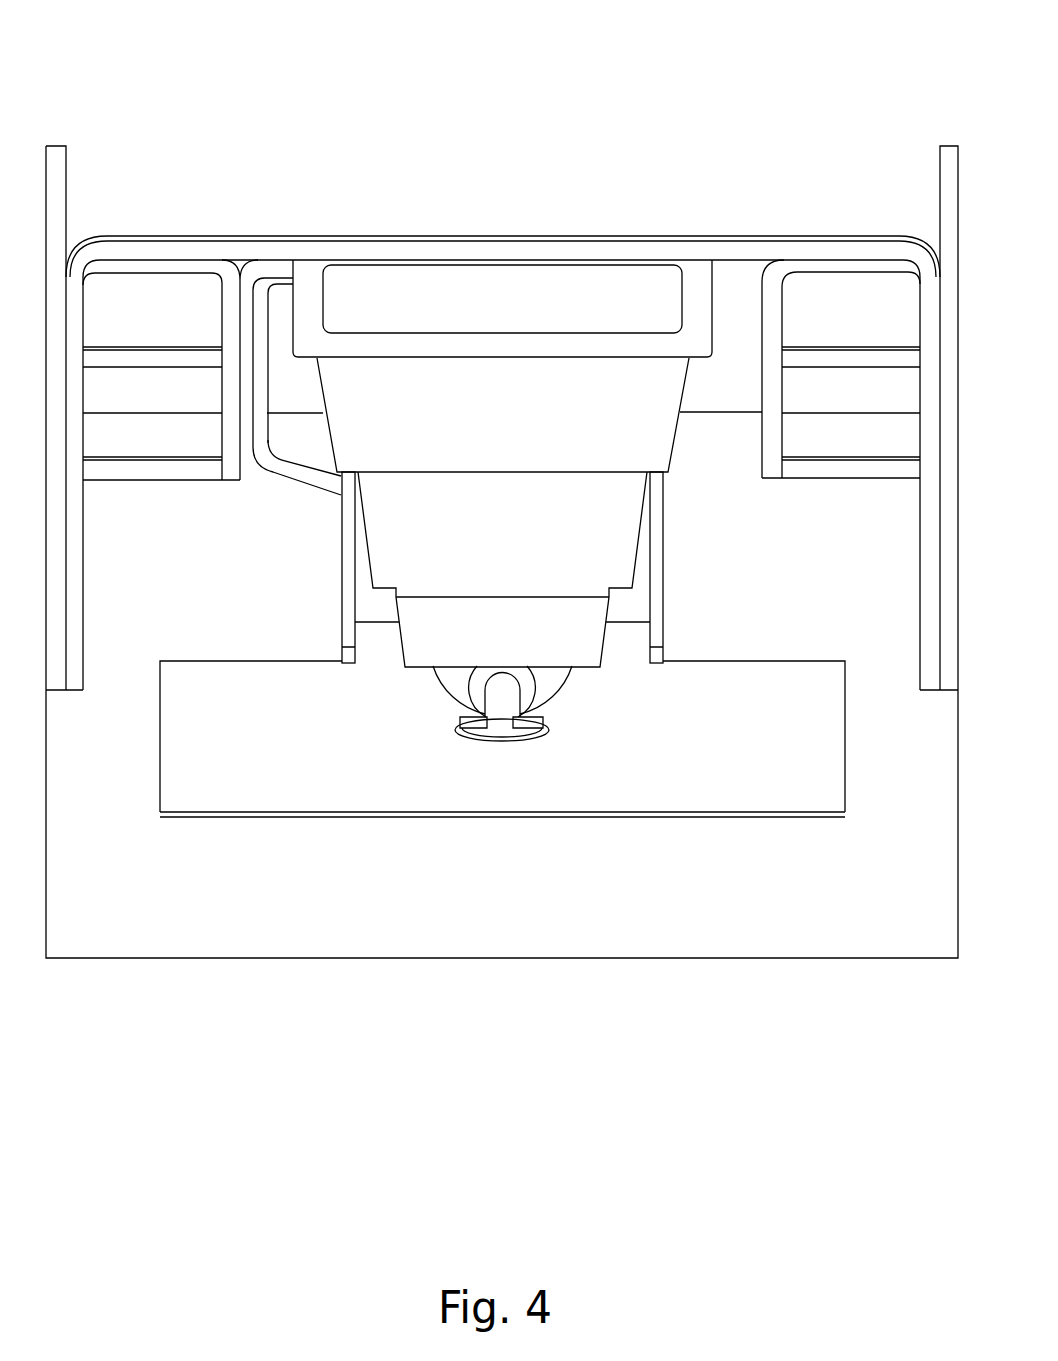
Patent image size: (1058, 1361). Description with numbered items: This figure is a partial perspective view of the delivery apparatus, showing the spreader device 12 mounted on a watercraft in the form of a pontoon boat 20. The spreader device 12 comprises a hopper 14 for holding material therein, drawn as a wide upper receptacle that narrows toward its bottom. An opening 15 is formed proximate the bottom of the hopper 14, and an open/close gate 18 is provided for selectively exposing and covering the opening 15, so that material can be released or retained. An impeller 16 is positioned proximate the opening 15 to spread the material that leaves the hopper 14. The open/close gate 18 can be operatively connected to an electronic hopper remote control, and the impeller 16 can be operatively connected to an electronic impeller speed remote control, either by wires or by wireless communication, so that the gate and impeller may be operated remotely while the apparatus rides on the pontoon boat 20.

The spreader device 12 is at (385, 412).
The hopper 14 is at (533, 302).
The opening 15 is at (487, 712).
The impeller 16 is at (493, 733).
The open/close gate 18 is at (527, 700).
The pontoon boat 20 is at (870, 880).